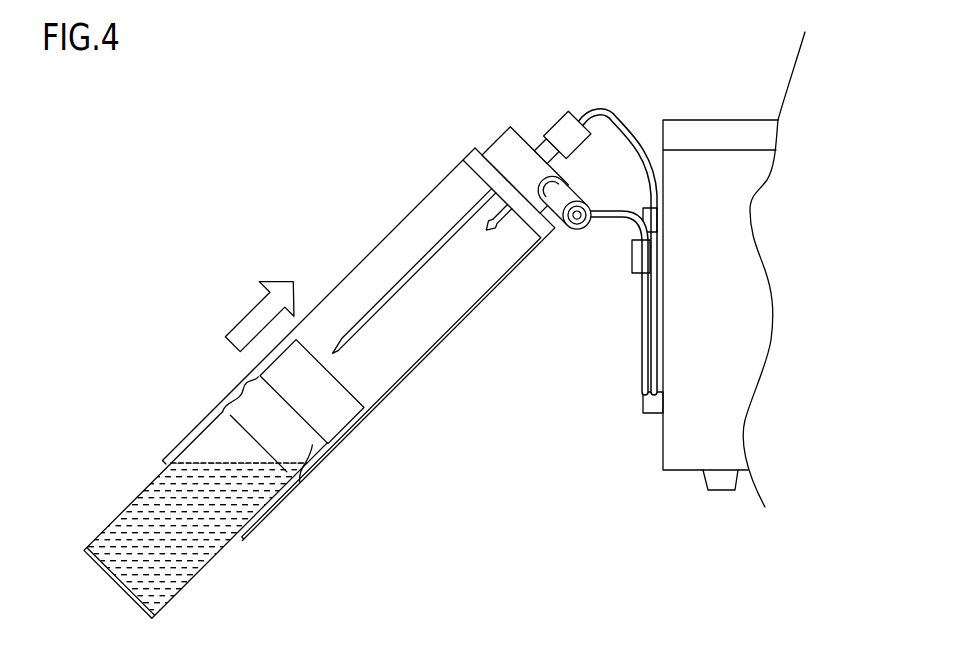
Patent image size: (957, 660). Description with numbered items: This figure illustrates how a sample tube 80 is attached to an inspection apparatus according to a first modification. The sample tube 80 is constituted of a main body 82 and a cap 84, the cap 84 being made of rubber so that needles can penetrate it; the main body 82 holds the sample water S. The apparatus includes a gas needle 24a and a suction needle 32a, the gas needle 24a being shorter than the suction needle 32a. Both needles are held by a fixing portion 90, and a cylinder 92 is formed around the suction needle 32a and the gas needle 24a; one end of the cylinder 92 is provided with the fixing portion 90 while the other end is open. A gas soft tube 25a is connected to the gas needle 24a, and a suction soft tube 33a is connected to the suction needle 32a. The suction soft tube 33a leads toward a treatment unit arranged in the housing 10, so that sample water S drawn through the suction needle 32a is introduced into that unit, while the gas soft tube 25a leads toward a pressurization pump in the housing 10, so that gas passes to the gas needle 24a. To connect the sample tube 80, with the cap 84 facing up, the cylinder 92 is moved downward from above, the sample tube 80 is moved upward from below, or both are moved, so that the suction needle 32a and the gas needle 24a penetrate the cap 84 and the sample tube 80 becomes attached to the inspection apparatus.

The housing 10 is at (663, 432).
The gas needle 24a is at (499, 212).
The gas soft tube 25a is at (613, 216).
The suction needle 32a is at (368, 328).
The suction soft tube 33a is at (623, 132).
The sample tube 80 is at (246, 482).
The main body 82 is at (300, 482).
The cap 84 is at (343, 430).
The fixing portion 90 is at (490, 145).
The cylinder 92 is at (380, 240).
The sample water S is at (190, 560).